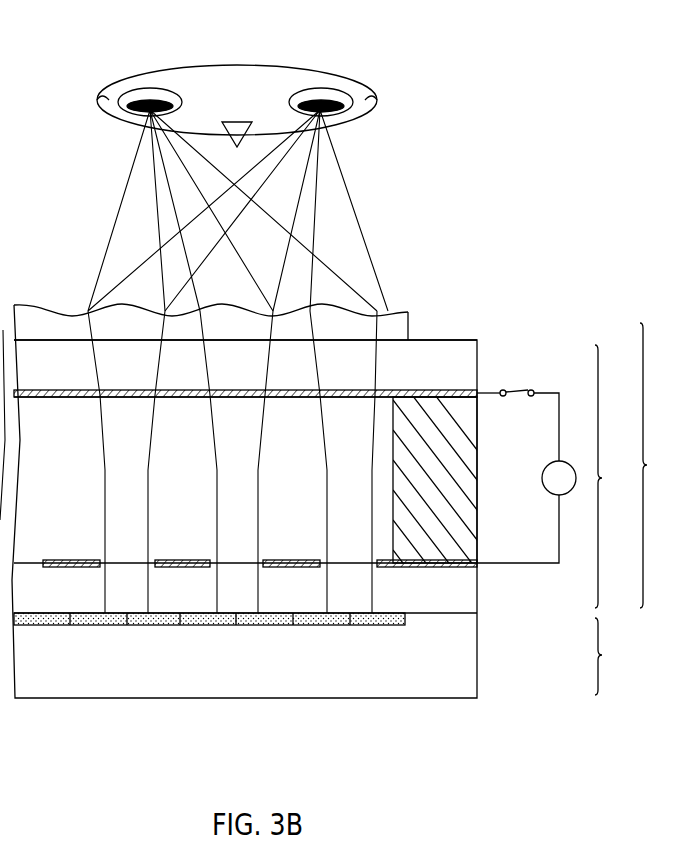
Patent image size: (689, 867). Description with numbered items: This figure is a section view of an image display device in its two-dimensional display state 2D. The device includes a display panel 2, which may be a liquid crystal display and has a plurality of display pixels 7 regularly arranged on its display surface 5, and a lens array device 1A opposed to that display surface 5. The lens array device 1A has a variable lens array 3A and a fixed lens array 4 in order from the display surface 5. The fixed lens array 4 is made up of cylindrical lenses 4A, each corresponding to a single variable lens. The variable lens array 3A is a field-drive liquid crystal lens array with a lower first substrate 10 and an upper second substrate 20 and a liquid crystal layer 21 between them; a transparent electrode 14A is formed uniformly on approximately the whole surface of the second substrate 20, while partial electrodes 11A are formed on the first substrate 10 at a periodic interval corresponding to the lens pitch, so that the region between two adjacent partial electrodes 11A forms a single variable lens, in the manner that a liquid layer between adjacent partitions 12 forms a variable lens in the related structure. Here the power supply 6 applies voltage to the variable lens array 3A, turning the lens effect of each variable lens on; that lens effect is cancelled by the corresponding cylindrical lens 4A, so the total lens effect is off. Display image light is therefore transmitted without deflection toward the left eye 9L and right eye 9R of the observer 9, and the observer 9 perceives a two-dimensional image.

The two-dimensional display mode 2D is at (237, 88).
The observer 9 is at (290, 67).
The right eye 9R is at (100, 100).
The left eye 9L is at (378, 100).
The cylindrical lens 4A is at (388, 310).
The fixed lens array 4 is at (424, 324).
The second substrate 20 is at (478, 345).
The transparent electrode 14A is at (478, 400).
The power supply 6 is at (567, 457).
The partition 12 is at (456, 446).
The liquid crystal layer 21 is at (387, 474).
The variable lens array 3A is at (615, 476).
The lens array device 1A is at (660, 465).
The first substrate 10 is at (472, 590).
The display surface 5 is at (426, 622).
The display panel 2 is at (609, 656).
The partial electrode 11A is at (48, 567).
The display pixel 7 is at (272, 625).